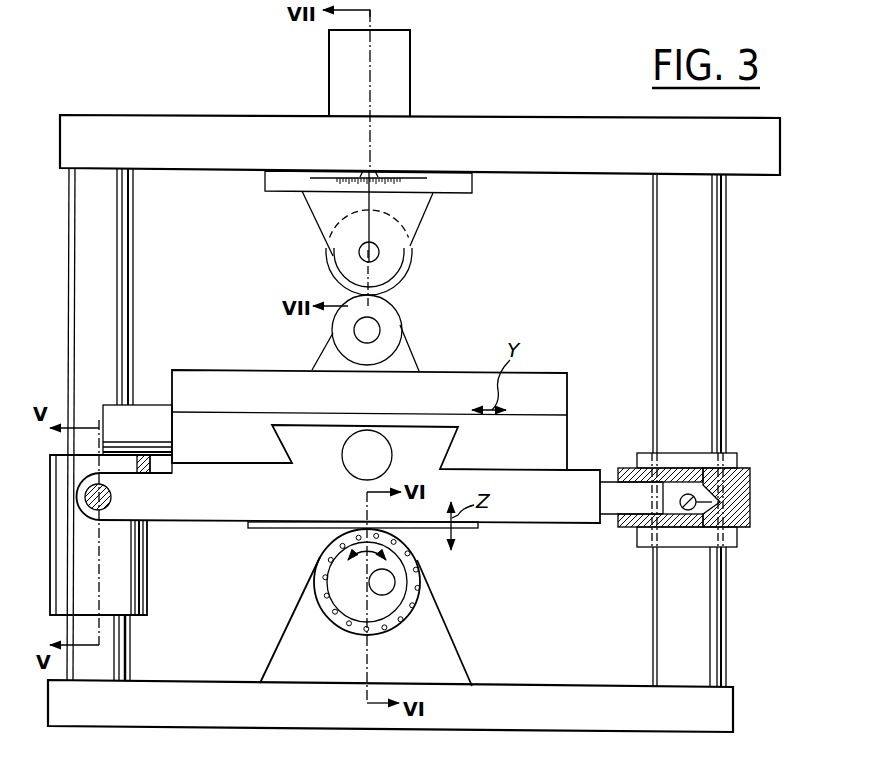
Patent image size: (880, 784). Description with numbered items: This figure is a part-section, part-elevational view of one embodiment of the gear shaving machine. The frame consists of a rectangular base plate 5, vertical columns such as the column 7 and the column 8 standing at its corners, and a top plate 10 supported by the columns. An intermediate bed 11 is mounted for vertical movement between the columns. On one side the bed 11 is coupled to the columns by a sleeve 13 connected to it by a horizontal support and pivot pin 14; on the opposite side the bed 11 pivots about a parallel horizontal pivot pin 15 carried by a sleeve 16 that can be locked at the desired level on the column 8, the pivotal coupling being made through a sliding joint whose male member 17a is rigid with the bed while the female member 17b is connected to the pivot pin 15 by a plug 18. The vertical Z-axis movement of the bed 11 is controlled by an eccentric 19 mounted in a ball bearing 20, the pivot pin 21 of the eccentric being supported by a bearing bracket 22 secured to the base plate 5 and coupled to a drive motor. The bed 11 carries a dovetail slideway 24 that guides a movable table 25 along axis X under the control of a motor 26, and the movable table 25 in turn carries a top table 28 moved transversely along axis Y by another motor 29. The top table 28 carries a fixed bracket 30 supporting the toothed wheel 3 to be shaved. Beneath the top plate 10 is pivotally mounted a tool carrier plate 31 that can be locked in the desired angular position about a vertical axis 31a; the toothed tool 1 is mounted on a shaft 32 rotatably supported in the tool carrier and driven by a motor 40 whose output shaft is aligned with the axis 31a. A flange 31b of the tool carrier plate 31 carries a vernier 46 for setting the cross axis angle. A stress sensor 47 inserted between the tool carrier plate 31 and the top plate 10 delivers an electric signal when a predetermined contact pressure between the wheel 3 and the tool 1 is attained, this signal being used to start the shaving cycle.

The toothed tool 1 is at (414, 253).
The toothed wheel 3 is at (405, 328).
The base plate 5 is at (522, 716).
The column 7 is at (82, 290).
The column 8 is at (713, 310).
The top plate 10 is at (525, 135).
The intermediate bed 11 is at (548, 522).
The sleeve 13 is at (132, 560).
The support and pivot pin 14 is at (112, 497).
The pivot pin 15 is at (748, 490).
The sleeve 16 is at (712, 455).
The male member 17a is at (645, 470).
The female member 17b is at (697, 530).
The plug 18 is at (690, 482).
The eccentric 19 is at (401, 572).
The ball bearing 20 is at (412, 590).
The pivot pin of eccentric 21 is at (368, 583).
The bearing bracket 22 is at (297, 635).
The dovetail slideway 24 is at (455, 428).
The movable table 25 is at (548, 437).
The motor 26 is at (350, 470).
The top table 28 is at (545, 413).
The motor 29 is at (152, 415).
The fixed bracket 30 is at (414, 356).
The tool carrier plate 31 is at (436, 197).
The vertical axis 31a is at (372, 85).
The flange 31b is at (474, 185).
The shaft 32 is at (352, 250).
The motor 40 is at (408, 42).
The vernier 46 is at (330, 185).
The stress sensor 47 is at (375, 175).